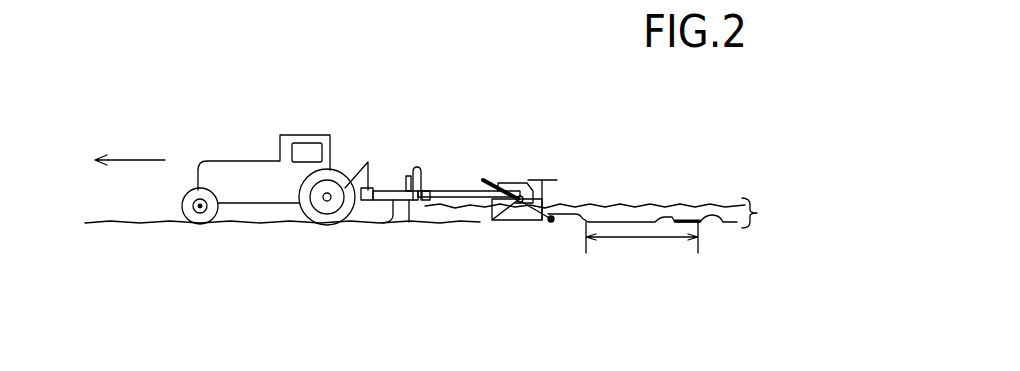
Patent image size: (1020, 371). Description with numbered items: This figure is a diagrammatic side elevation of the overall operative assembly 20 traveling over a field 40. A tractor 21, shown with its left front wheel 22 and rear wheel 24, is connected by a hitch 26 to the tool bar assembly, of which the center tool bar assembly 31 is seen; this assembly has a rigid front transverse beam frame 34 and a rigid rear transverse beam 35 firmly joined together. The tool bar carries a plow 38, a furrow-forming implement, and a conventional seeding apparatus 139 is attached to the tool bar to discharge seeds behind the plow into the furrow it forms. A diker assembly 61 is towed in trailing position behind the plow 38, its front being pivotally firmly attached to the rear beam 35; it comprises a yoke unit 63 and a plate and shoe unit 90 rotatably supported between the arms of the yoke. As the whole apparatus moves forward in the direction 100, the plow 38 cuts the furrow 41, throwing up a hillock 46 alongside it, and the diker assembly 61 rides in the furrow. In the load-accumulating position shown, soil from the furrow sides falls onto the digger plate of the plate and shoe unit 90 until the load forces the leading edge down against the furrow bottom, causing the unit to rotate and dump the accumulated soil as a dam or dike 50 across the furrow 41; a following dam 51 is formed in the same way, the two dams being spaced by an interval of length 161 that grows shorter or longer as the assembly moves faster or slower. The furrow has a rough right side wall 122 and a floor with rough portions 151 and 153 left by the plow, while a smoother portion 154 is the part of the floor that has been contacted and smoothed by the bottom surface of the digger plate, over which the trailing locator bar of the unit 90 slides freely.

The overall operative assembly 20 is at (360, 170).
The tractor 21 is at (254, 154).
The left front wheel 22 is at (208, 217).
The rear wheel 24 is at (318, 220).
The hitch 26 is at (356, 165).
The center tool bar assembly 31 is at (408, 155).
The rigid front transverse beam frame 34 is at (368, 195).
The rigid rear transverse beam 35 is at (425, 193).
The plow 38 is at (398, 212).
The seeding apparatus 139 is at (411, 222).
The field 40 is at (446, 195).
The furrow 41 is at (469, 226).
The hillock 46 is at (600, 213).
The dam or dike 50 is at (573, 220).
The dam 51 is at (757, 202).
The diker assembly 61 is at (487, 166).
The yoke unit 63 is at (462, 194).
The plate and shoe unit 90 is at (515, 174).
The direction of forward travel 100 is at (130, 147).
The right side wall 122 is at (650, 210).
The rough portion of trough floor 151 is at (682, 220).
The rough portion of trough floor 153 is at (677, 218).
The smoother portion of trough floor 154 is at (622, 220).
The interval of length between dams 161 is at (645, 238).